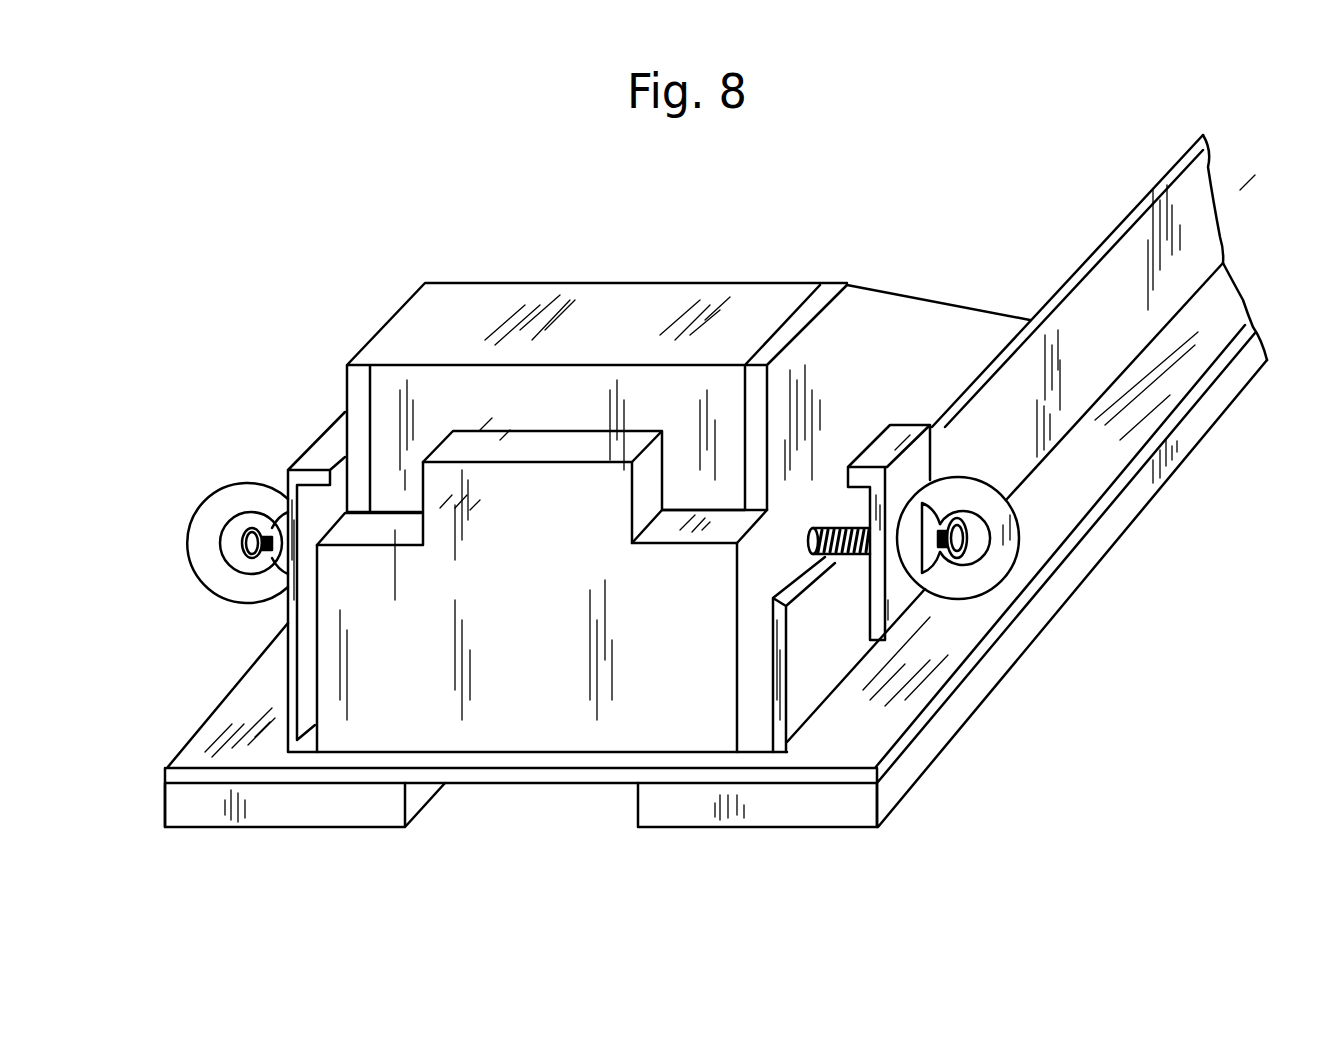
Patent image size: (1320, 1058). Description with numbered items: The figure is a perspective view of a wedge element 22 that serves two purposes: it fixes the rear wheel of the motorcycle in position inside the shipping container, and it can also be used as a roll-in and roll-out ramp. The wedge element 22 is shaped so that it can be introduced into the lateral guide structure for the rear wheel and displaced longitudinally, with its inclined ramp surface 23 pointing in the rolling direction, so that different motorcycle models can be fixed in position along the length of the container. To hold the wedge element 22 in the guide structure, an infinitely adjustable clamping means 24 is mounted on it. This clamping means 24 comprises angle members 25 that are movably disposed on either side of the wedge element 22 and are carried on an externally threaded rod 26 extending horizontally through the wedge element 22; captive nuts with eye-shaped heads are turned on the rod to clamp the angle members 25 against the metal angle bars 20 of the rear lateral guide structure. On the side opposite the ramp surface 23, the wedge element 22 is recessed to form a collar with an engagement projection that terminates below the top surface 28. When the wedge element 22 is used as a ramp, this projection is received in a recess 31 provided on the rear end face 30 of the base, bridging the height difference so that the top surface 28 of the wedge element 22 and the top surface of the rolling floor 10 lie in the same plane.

The rolling floor 10 is at (878, 735).
The metal angle bars 20 is at (1192, 258).
The wedge element 22 is at (680, 760).
The inclined ramp surface 23 is at (742, 300).
The clamping means 24 is at (848, 465).
The angle members 25 is at (932, 427).
The externally threaded rod 26 is at (968, 537).
The top surface 28 is at (633, 455).
The rear end face 30 is at (813, 808).
The recess 31 is at (520, 802).